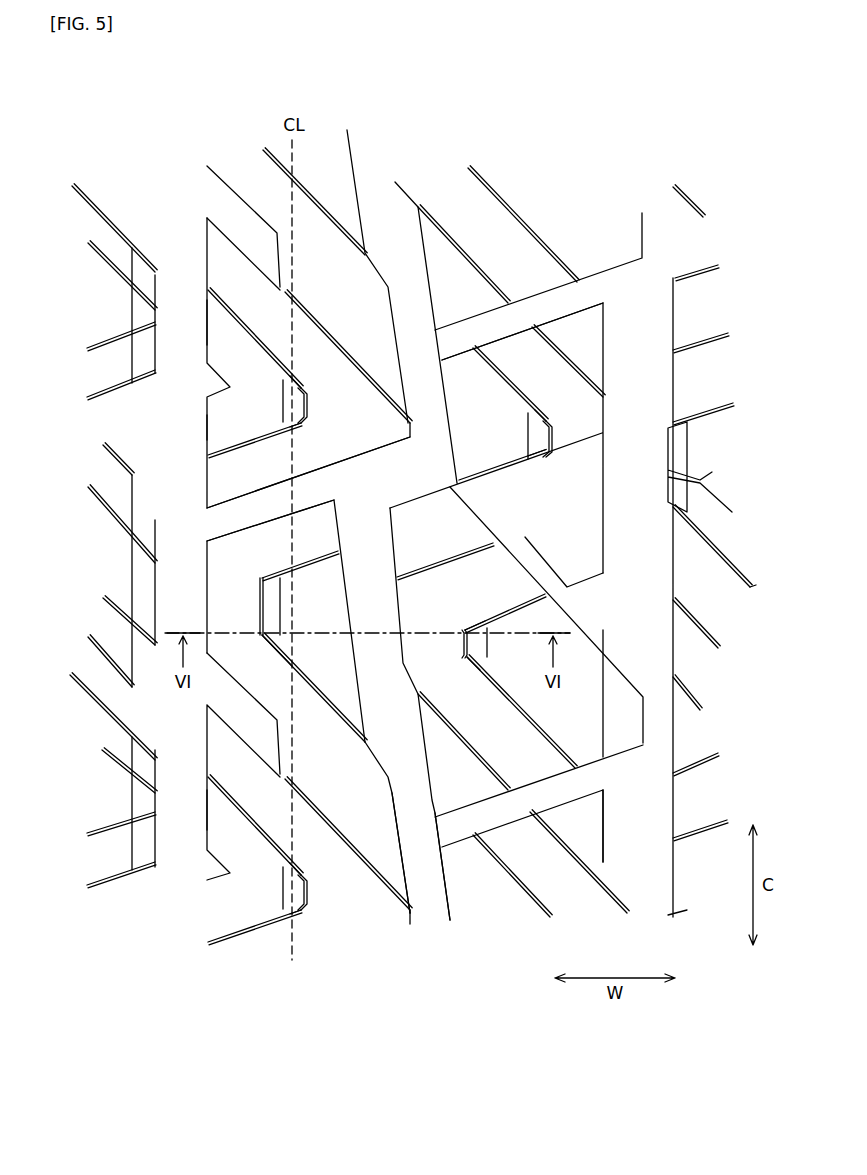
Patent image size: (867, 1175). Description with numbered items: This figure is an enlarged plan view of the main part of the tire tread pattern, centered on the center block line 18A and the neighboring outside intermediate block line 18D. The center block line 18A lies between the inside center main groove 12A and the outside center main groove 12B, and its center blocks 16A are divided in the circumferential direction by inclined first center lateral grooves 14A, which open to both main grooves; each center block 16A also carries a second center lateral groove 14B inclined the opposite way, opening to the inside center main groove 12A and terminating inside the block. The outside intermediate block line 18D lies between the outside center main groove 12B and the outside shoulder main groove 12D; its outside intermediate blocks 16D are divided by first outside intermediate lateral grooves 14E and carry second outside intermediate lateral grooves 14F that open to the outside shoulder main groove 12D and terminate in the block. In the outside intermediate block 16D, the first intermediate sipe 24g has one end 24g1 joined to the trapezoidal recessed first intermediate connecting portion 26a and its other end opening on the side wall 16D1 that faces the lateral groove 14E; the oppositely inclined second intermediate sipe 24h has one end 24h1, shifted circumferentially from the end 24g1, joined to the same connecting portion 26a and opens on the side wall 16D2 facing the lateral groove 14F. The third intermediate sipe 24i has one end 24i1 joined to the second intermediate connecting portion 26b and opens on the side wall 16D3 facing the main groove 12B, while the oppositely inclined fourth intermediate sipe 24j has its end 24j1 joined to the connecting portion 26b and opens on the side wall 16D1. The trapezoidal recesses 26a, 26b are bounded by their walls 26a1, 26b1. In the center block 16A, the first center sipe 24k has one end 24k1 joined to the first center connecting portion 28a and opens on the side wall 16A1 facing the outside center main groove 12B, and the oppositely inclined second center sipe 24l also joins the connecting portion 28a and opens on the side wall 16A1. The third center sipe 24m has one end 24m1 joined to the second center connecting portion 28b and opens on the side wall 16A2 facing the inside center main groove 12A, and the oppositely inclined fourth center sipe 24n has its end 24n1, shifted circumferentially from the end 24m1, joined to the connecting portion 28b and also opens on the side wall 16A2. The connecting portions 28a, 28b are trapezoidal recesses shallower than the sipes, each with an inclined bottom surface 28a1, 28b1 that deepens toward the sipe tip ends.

The inside center main groove 12A is at (185, 849).
The outside center main groove 12B is at (426, 851).
The outside shoulder main groove 12D is at (650, 866).
The first center lateral groove 14A is at (243, 510).
The second center lateral groove 14B is at (248, 232).
The first outside intermediate lateral groove 14E is at (560, 293).
The second outside intermediate lateral groove 14F is at (545, 562).
The center block 16A is at (222, 267).
The side wall of center block 16A1 is at (392, 760).
The side wall of center block 16A2 is at (208, 322).
The outside intermediate block 16D is at (503, 255).
The side wall of outside intermediate block 16D1 is at (555, 317).
The side wall of outside intermediate block 16D2 is at (547, 590).
The side wall of outside intermediate block 16D3 is at (445, 418).
The center block line 18A is at (338, 146).
The outside intermediate block line 18D is at (544, 201).
The first intermediate sipe 24g is at (508, 703).
The one end of first intermediate sipe 24g1 is at (470, 660).
The second intermediate sipe 24h is at (508, 608).
The one end of second intermediate sipe 24h1 is at (468, 630).
The third intermediate sipe 24i is at (505, 467).
The one end of third intermediate sipe 24i1 is at (544, 455).
The fourth intermediate sipe 24j is at (522, 390).
The one end of fourth intermediate sipe 24j1 is at (543, 417).
The first center sipe 24k is at (312, 700).
The one end of first center sipe 24k1 is at (260, 647).
The second center sipe 24l is at (313, 556).
The third center sipe 24m is at (263, 437).
The one end of third center sipe 24m1 is at (299, 423).
The fourth center sipe 24n is at (278, 362).
The one end of fourth center sipe 24n1 is at (302, 390).
The first intermediate connecting portion 26a is at (462, 645).
The bent portion wall 26a1 is at (478, 643).
The second intermediate connecting portion 26b is at (553, 440).
The bent portion wall 26b1 is at (537, 437).
The first center connecting portion 28a is at (259, 605).
The inclined bottom surface 28a1 is at (270, 593).
The second center connecting portion 28b is at (307, 406).
The inclined bottom surface 28b1 is at (282, 406).